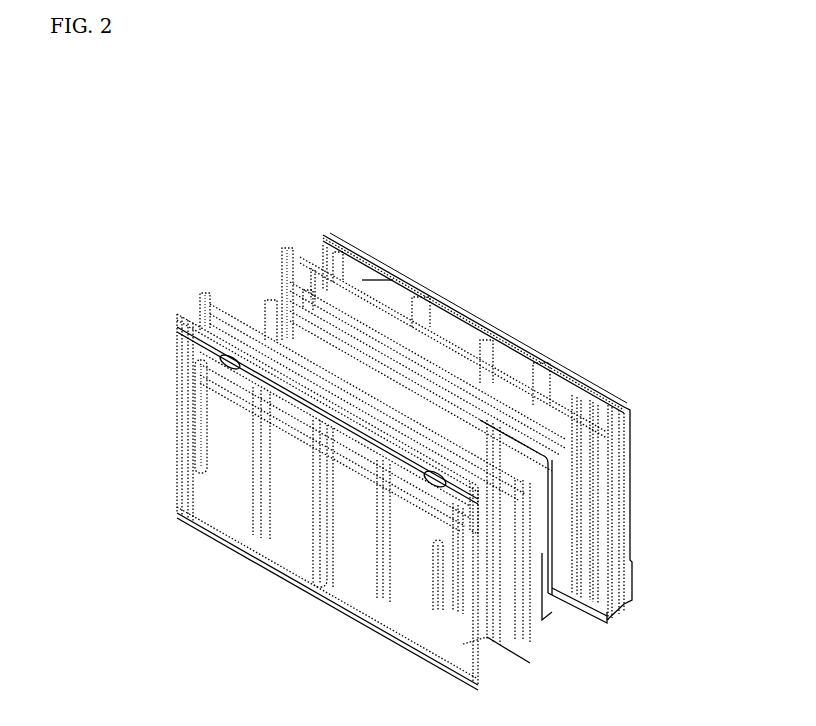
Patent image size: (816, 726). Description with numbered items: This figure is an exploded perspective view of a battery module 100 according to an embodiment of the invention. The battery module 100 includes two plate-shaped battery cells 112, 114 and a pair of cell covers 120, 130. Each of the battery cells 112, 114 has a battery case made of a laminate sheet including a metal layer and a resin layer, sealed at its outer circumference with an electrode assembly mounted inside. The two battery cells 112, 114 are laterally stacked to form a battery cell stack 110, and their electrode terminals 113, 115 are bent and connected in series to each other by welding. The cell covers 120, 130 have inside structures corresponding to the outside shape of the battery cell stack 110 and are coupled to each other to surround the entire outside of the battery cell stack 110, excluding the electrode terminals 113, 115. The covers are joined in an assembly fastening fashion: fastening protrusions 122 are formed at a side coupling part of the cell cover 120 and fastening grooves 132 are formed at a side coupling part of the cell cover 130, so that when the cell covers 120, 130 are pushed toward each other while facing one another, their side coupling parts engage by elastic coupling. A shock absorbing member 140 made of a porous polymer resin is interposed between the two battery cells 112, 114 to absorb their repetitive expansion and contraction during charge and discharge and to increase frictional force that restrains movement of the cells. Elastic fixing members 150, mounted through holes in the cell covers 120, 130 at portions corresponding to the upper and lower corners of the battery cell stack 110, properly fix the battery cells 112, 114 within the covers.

The battery module 100 is at (97, 147).
The battery cell stack 110 is at (140, 223).
The battery cell 112 is at (195, 307).
The electrode terminal 113 is at (576, 612).
The battery cell 114 is at (277, 248).
The electrode terminal 115 is at (620, 530).
The cell cover 120 is at (170, 425).
The fastening protrusions 122 is at (357, 417).
The cell cover 130 is at (603, 378).
The fastening grooves 132 is at (500, 334).
The shock absorbing member 140 is at (440, 389).
The fixing members 150 is at (362, 280).